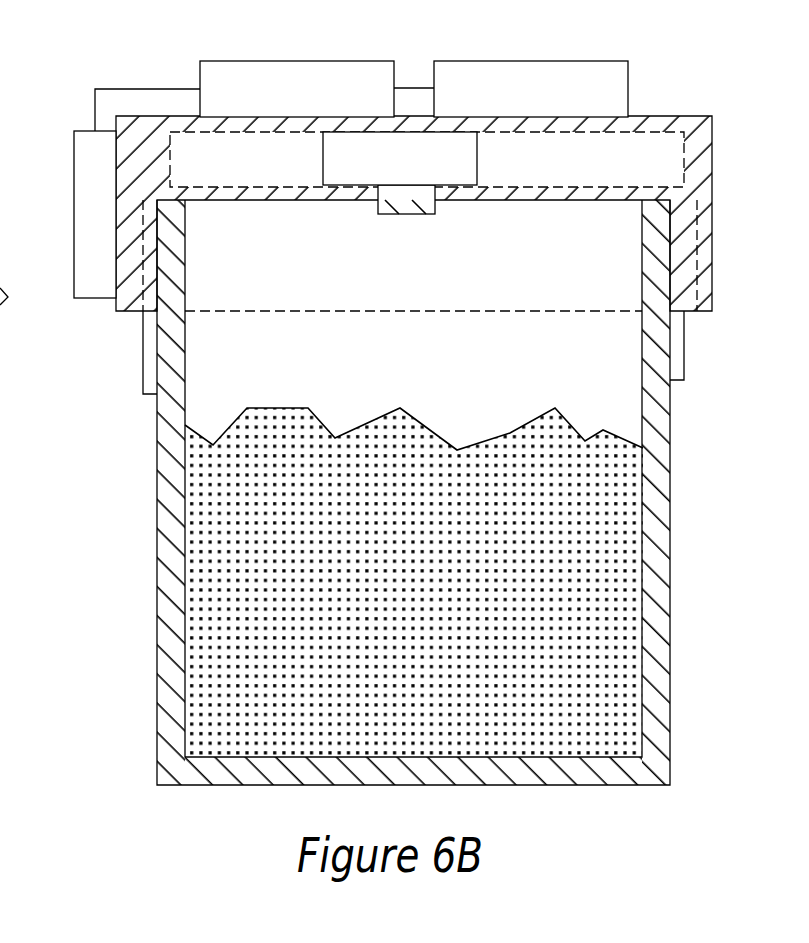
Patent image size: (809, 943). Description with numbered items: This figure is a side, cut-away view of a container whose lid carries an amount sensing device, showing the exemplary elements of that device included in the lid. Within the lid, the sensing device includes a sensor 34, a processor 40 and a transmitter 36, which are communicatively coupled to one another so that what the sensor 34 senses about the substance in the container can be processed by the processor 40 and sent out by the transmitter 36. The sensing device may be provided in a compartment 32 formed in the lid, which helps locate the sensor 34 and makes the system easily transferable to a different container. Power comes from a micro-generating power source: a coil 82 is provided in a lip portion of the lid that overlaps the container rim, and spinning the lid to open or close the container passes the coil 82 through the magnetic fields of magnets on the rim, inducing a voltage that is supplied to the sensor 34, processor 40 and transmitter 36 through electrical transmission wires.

The processor 40 is at (360, 61).
The transmitter 36 is at (598, 61).
The sensor 34 is at (347, 178).
The coil 82 is at (73, 152).
The compartment 32 is at (623, 438).